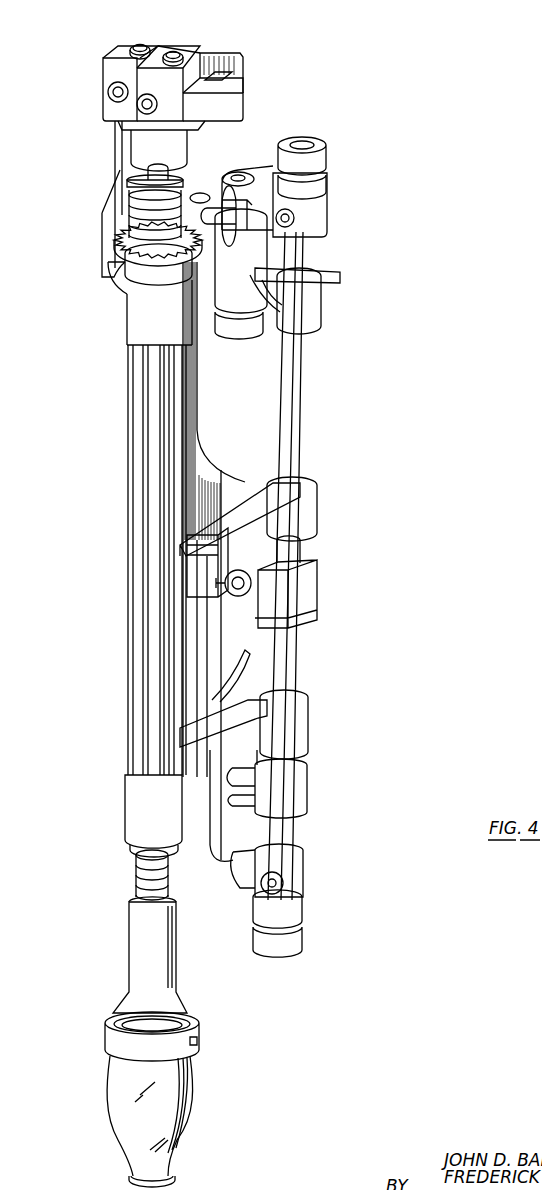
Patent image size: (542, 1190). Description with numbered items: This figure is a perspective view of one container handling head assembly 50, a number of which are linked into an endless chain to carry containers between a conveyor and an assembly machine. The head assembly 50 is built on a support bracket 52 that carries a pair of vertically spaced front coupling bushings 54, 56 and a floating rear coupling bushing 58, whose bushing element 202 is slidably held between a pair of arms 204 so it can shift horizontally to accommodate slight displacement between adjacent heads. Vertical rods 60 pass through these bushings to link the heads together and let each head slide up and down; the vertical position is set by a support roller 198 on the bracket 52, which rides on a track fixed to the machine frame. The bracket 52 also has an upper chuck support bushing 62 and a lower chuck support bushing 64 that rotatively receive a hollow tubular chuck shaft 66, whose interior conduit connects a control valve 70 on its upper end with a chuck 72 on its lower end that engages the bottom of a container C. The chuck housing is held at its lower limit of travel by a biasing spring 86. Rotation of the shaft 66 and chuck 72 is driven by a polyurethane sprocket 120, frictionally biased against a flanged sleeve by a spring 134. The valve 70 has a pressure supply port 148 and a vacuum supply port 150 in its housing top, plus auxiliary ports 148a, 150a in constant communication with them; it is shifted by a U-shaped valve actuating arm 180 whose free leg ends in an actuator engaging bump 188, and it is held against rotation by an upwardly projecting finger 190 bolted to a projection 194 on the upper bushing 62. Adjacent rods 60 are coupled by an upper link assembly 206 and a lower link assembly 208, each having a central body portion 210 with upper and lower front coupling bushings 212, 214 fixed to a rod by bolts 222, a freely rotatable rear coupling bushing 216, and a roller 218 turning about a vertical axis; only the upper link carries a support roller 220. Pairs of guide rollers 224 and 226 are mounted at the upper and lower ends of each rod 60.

The head assembly 50 is at (117, 418).
The support bracket 52 is at (196, 478).
The front coupling bushing 54 is at (310, 511).
The front coupling bushing 56 is at (300, 725).
The rear coupling bushing 58 is at (190, 600).
The vertical rod 60 is at (300, 392).
The upper chuck support bushing 62 is at (128, 322).
The lower chuck support bushing 64 is at (125, 812).
The hollow tubular chuck shaft 66 is at (148, 652).
The control valve 70 is at (91, 67).
The chuck 72 is at (117, 950).
The biasing spring 86 is at (137, 871).
The sprocket 120 is at (118, 235).
The spring 134 is at (130, 206).
The pressure supply port 148 is at (140, 44).
The vacuum supply port 150 is at (176, 52).
The auxiliary pressure port 148a is at (108, 92).
The auxiliary vacuum port 150a is at (137, 106).
The valve actuating arm 180 is at (243, 97).
The actuator engaging bump 188 is at (222, 52).
The finger 190 is at (116, 143).
The projection 194 is at (118, 279).
The support roller 198 is at (303, 552).
The bushing element 202 is at (310, 602).
The arms 204 is at (192, 578).
The upper link assembly 206 is at (272, 263).
The lower link assembly 208 is at (212, 855).
The central body portion 210 is at (215, 290).
The upper front coupling bushing 212 is at (320, 214).
The lower front coupling bushing 214 is at (315, 301).
The rear coupling bushing 216 is at (199, 192).
The roller 218 is at (238, 326).
The support roller 220 is at (258, 172).
The bolt 222 is at (305, 232).
The guide rollers 224 is at (325, 151).
The guide rollers 226 is at (325, 178).
The container C is at (183, 1096).